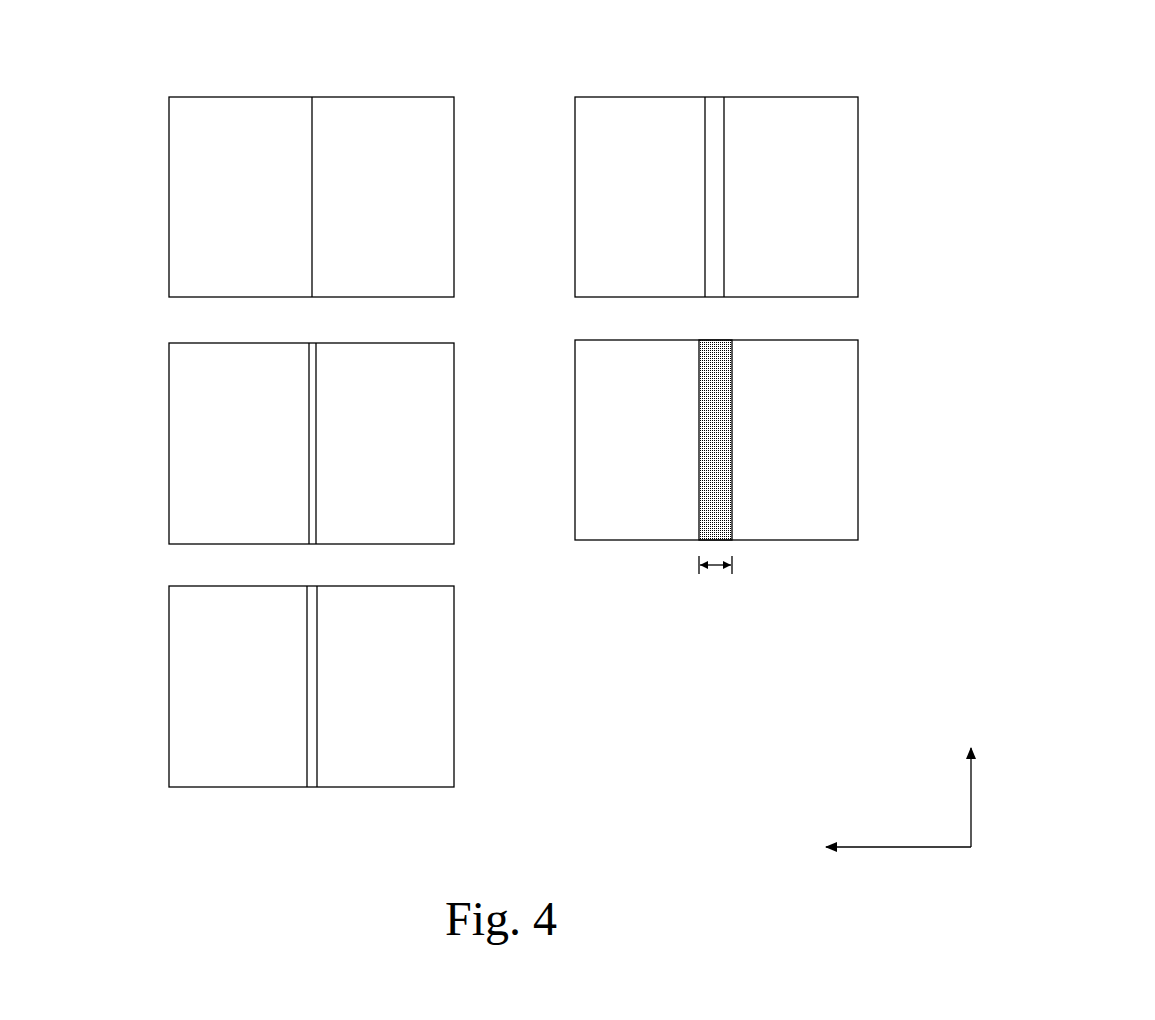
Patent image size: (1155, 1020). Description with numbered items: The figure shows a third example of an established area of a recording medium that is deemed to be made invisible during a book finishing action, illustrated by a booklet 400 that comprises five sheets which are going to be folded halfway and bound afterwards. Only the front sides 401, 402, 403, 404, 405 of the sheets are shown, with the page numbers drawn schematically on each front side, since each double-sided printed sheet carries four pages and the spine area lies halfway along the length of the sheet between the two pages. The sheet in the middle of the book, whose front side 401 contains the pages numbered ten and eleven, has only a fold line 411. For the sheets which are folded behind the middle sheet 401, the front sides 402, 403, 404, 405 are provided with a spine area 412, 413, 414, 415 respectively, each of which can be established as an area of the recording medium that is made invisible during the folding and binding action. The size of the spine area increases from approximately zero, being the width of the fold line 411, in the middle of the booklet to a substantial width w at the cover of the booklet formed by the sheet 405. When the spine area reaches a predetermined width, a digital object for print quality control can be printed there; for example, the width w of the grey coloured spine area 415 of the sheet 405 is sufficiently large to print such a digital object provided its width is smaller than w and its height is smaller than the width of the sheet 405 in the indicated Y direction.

The booklet 400 is at (1007, 122).
The front side of middle sheet 401 is at (270, 180).
The front side of sheet 402 is at (272, 460).
The front side of sheet 403 is at (266, 717).
The front side of sheet 404 is at (759, 161).
The front side of cover sheet 405 is at (766, 454).
The fold line 411 is at (312, 122).
The spine area 412 is at (313, 518).
The spine area 413 is at (313, 788).
The spine area 414 is at (718, 110).
The spine area 415 is at (716, 387).